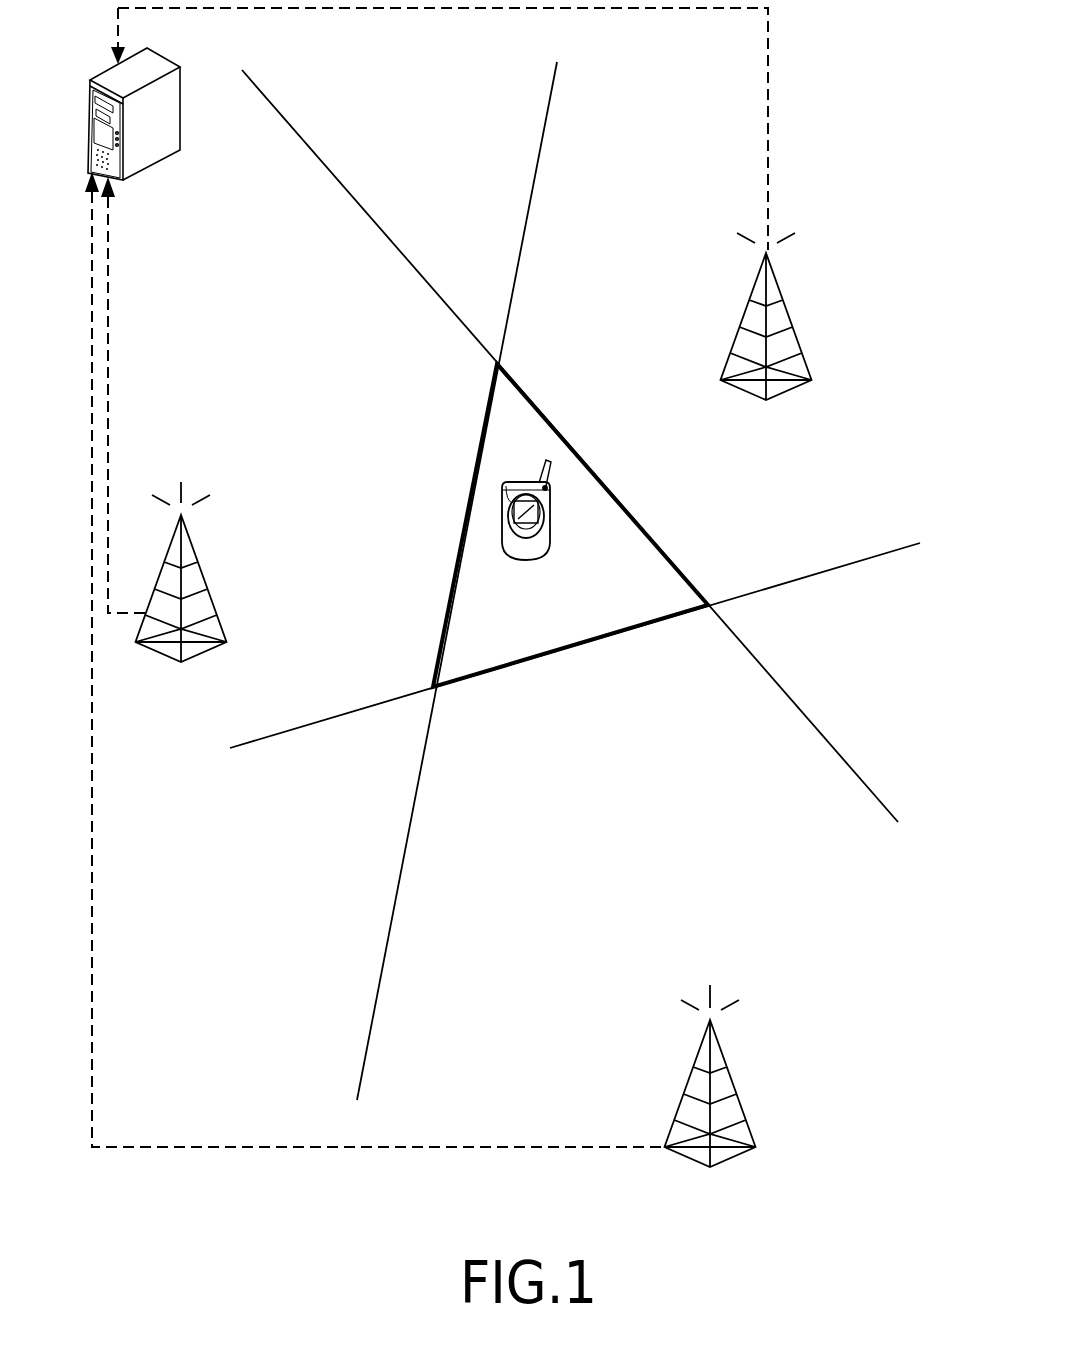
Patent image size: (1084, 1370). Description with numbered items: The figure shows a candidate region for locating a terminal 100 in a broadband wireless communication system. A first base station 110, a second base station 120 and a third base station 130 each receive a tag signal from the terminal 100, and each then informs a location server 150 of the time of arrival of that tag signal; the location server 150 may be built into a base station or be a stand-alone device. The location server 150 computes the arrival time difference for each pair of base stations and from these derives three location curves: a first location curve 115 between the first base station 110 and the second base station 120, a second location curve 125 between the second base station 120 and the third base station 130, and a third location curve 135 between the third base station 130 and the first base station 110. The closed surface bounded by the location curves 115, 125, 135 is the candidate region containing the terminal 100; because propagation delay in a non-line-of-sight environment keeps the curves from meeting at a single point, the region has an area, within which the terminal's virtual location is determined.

The terminal 100 is at (528, 546).
The first base station 110 is at (182, 604).
The second base station 120 is at (769, 352).
The third base station 130 is at (712, 1112).
The location server 150 is at (610, 483).
The first location curve 115 is at (312, 150).
The second location curve 125 is at (861, 561).
The third location curve 135 is at (546, 133).